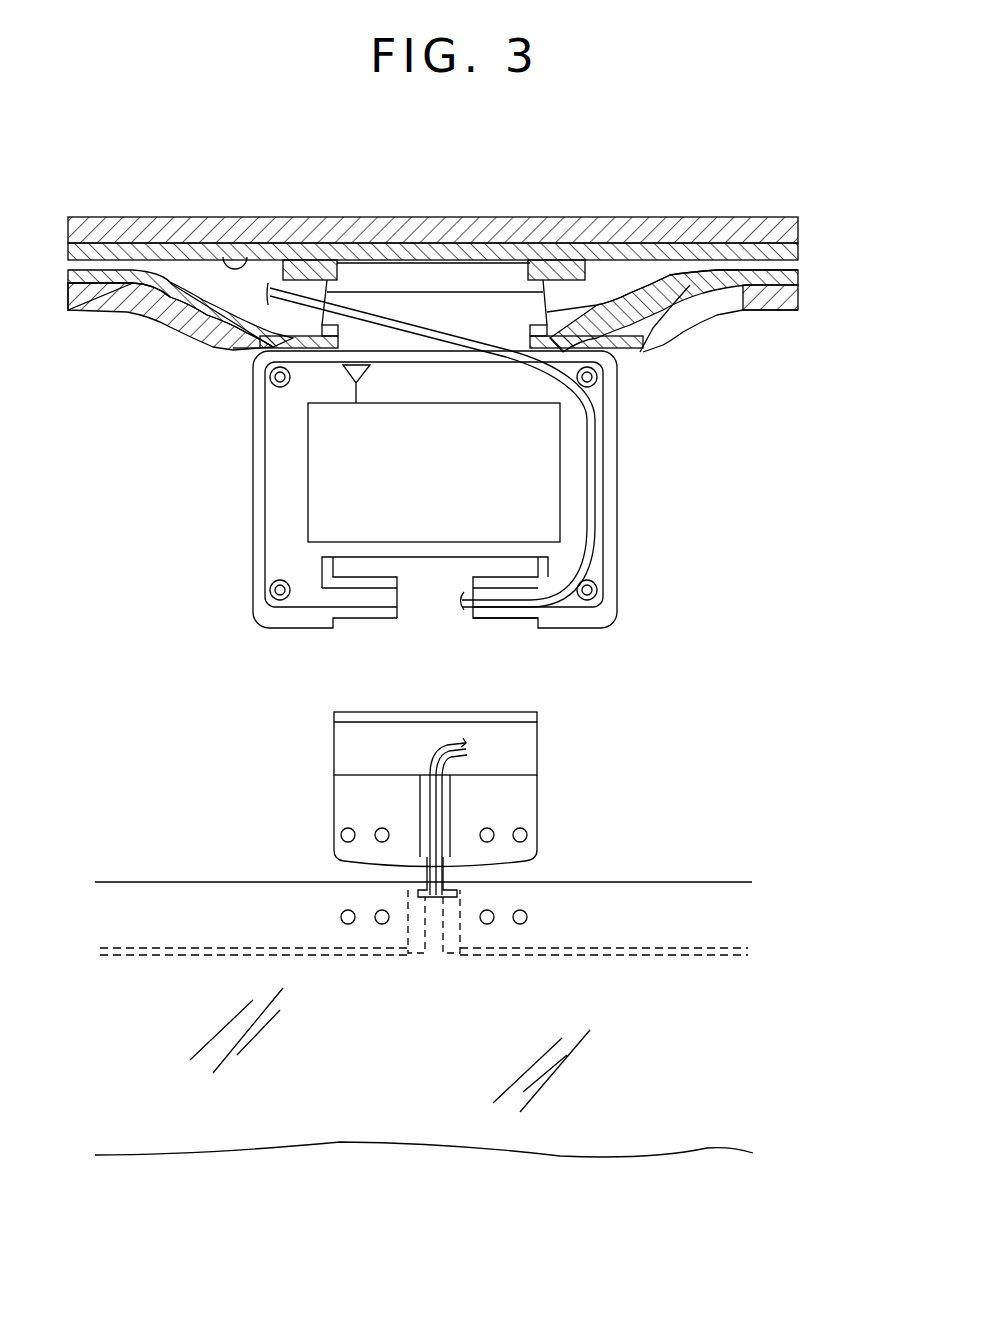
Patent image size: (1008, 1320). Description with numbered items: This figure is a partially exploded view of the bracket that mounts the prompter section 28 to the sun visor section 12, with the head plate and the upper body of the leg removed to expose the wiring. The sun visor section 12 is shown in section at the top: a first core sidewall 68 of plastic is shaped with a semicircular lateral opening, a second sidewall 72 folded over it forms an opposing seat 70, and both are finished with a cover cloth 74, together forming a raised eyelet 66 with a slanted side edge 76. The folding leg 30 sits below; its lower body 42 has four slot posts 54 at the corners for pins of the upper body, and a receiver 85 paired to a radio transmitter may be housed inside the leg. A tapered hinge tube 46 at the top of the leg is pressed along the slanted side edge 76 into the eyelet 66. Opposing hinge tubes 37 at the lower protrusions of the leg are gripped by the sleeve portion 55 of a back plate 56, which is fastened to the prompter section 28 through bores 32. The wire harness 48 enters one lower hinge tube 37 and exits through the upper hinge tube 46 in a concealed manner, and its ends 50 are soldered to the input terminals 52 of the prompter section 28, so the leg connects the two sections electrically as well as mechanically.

The sun visor section 12 is at (433, 188).
The first core sidewall 68 is at (170, 272).
The second sidewall 72 is at (223, 257).
The cover cloth 74 is at (577, 230).
The opposing seat 70 is at (577, 282).
The slanted side edge 76 is at (623, 352).
The eyelet 66 is at (530, 340).
The hinge tube 46 is at (637, 350).
The folding leg 30 is at (253, 460).
The receiver 85 is at (560, 453).
The lower body 42 is at (615, 510).
The slot post 54 is at (280, 583).
The wire harness 48 is at (588, 543).
The hinge tube 37 is at (397, 618).
The sleeve portion 55 is at (347, 745).
The back plate 56 is at (334, 815).
The bore 32 is at (340, 917).
The end 50 is at (463, 897).
The prompter section 28 is at (478, 960).
The input terminal 52 is at (437, 933).